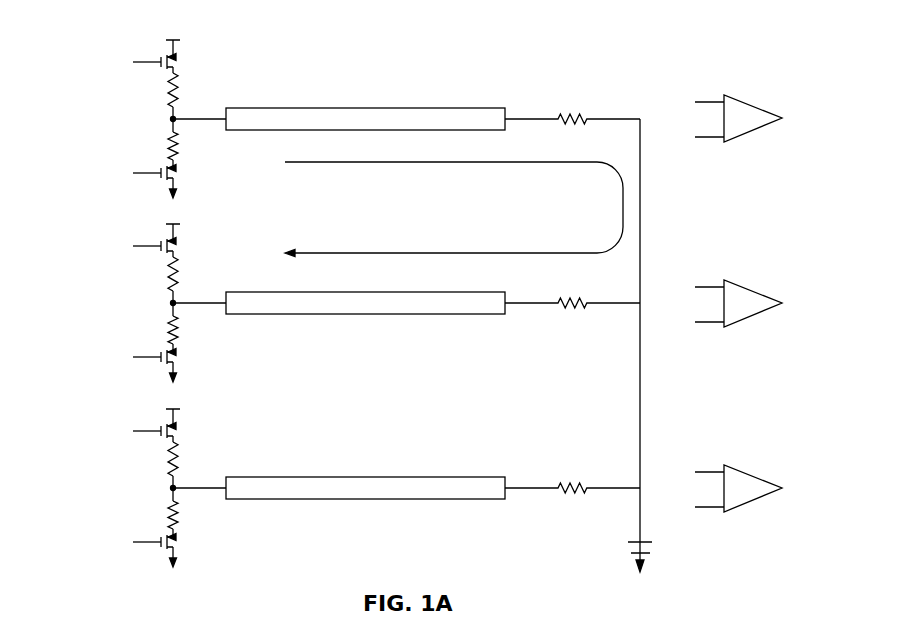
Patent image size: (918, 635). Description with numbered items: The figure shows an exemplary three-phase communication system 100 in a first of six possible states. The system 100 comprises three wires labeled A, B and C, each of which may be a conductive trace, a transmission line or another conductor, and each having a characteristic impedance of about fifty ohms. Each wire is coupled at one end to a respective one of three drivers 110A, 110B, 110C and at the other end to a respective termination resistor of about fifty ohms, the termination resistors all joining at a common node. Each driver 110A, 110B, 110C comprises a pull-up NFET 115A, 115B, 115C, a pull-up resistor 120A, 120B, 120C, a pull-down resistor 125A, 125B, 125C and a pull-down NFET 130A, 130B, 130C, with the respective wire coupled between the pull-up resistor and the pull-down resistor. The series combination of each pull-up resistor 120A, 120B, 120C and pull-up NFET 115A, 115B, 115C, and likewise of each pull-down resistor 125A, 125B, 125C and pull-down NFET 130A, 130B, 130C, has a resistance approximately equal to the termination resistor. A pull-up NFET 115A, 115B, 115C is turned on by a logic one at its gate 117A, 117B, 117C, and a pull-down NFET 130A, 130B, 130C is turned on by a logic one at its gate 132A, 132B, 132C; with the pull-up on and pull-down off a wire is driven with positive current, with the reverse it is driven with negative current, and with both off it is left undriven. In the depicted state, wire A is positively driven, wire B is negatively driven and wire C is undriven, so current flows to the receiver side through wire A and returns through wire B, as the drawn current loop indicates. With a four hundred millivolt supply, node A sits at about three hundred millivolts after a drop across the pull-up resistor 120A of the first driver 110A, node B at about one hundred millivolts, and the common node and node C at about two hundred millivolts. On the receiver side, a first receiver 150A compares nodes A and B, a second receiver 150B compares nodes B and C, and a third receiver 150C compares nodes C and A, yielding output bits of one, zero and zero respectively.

The 3-phase communication system 100 is at (628, 37).
The first driver 110A is at (102, 43).
The second driver 110B is at (105, 287).
The third driver 110C is at (100, 475).
The pull-up NFET 115A is at (178, 60).
The pull-up NFET 115B is at (178, 244).
The pull-up NFET 115C is at (178, 429).
The gate 117A is at (148, 64).
The gate 117B is at (148, 248).
The gate 117C is at (148, 433).
The pull-up resistor 120A is at (182, 82).
The pull-up resistor 120B is at (182, 266).
The pull-up resistor 120C is at (182, 451).
The pull-down resistor 125A is at (183, 143).
The pull-down resistor 125B is at (183, 327).
The pull-down resistor 125C is at (183, 512).
The pull-down NFET 130A is at (178, 172).
The pull-down NFET 130B is at (178, 356).
The pull-down NFET 130C is at (178, 541).
The gate 132A is at (148, 170).
The gate 132B is at (148, 354).
The gate 132C is at (148, 539).
The first receiver 150A is at (746, 100).
The second receiver 150B is at (746, 285).
The third receiver 150C is at (746, 469).